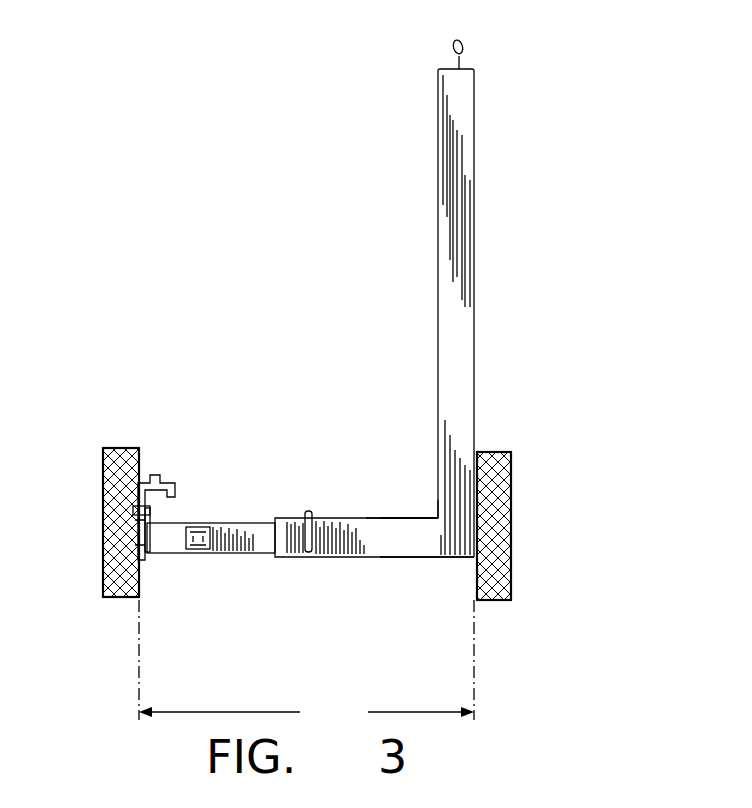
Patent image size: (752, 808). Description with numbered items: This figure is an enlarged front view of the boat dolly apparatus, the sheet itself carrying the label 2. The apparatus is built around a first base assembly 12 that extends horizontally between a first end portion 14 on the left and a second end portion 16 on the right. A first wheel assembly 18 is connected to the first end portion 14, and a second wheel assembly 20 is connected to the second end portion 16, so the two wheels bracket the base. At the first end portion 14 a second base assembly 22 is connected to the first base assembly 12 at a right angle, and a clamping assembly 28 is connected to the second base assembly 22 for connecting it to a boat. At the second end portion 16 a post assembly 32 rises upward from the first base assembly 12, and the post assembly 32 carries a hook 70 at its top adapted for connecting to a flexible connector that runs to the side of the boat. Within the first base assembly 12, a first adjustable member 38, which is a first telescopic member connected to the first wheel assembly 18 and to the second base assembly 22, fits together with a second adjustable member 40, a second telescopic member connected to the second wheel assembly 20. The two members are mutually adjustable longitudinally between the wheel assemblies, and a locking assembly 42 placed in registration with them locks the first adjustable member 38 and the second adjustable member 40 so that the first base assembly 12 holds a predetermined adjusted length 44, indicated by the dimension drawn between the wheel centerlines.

The hand cart 2 is at (312, 368).
The first base assembly 12 is at (300, 568).
The first end portion 14 is at (220, 556).
The second end portion 16 is at (413, 540).
The first wheel assembly 18 is at (120, 460).
The second wheel assembly 20 is at (493, 462).
The second base assembly 22 is at (148, 556).
The clamping assembly 28 is at (180, 465).
The post assembly 32 is at (462, 252).
The first adjustable member 38 is at (255, 553).
The second adjustable member 40 is at (368, 528).
The locking assembly 42 is at (311, 500).
The predetermined adjusted length 44 is at (306, 666).
The hook 70 is at (463, 45).